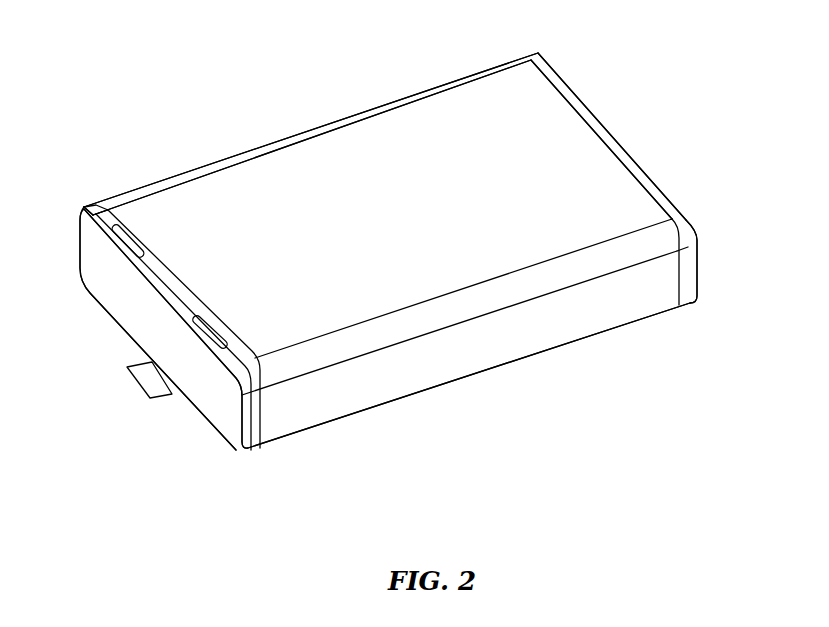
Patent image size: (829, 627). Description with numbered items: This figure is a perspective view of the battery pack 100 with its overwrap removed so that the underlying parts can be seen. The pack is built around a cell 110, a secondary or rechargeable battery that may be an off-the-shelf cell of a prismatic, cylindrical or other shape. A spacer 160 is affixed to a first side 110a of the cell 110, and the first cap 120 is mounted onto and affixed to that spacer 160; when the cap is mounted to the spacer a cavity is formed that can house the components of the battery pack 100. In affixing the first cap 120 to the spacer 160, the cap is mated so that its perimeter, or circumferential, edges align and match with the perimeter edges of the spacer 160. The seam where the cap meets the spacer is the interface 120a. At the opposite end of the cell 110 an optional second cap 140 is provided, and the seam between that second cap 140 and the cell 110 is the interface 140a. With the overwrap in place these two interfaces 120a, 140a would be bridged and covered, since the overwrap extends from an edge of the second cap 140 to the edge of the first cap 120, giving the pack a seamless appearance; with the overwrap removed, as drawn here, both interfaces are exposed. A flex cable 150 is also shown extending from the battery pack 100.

The battery pack 100 is at (620, 88).
The cell 110 is at (303, 153).
The first side of the cell 110a is at (112, 206).
The first cap 120 is at (231, 427).
The interface between the cap and spacer 120a is at (83, 207).
The second cap 140 is at (682, 276).
The interface between the second cap and cell 140a is at (618, 168).
The flex cable 150 is at (143, 381).
The spacer 160 is at (257, 432).